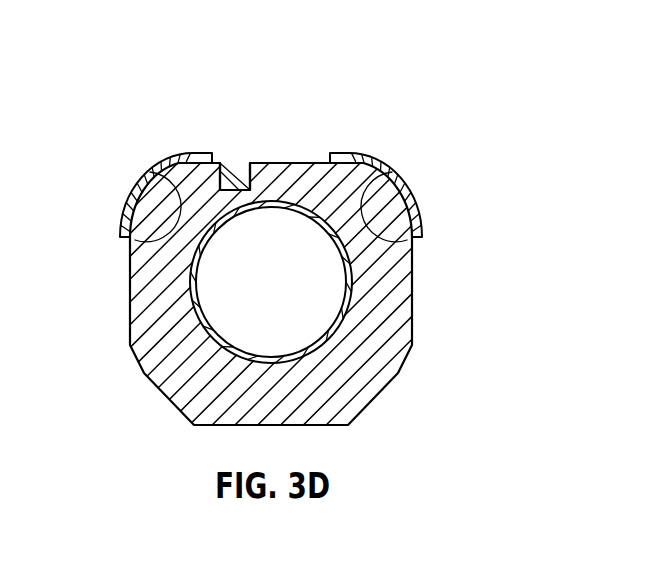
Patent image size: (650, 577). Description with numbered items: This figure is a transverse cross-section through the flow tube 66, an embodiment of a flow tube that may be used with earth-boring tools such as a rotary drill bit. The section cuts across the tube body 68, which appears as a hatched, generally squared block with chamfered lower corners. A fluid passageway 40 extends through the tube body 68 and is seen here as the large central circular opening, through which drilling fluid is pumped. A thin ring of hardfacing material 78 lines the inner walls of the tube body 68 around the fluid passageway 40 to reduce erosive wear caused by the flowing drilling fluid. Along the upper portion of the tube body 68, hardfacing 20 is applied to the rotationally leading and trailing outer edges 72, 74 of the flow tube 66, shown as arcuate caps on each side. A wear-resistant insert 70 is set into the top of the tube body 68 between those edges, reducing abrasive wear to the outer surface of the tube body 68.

The flow tube 66 is at (180, 96).
The tube body 68 is at (153, 332).
The wear-resistant inserts 70 is at (237, 182).
The hardfacing 20 is at (153, 173).
The rotationally leading outer edge 72 is at (142, 240).
The rotationally trailing outer edge 74 is at (402, 244).
The hardfacing material 78 is at (328, 230).
The fluid passageway 40 is at (280, 293).